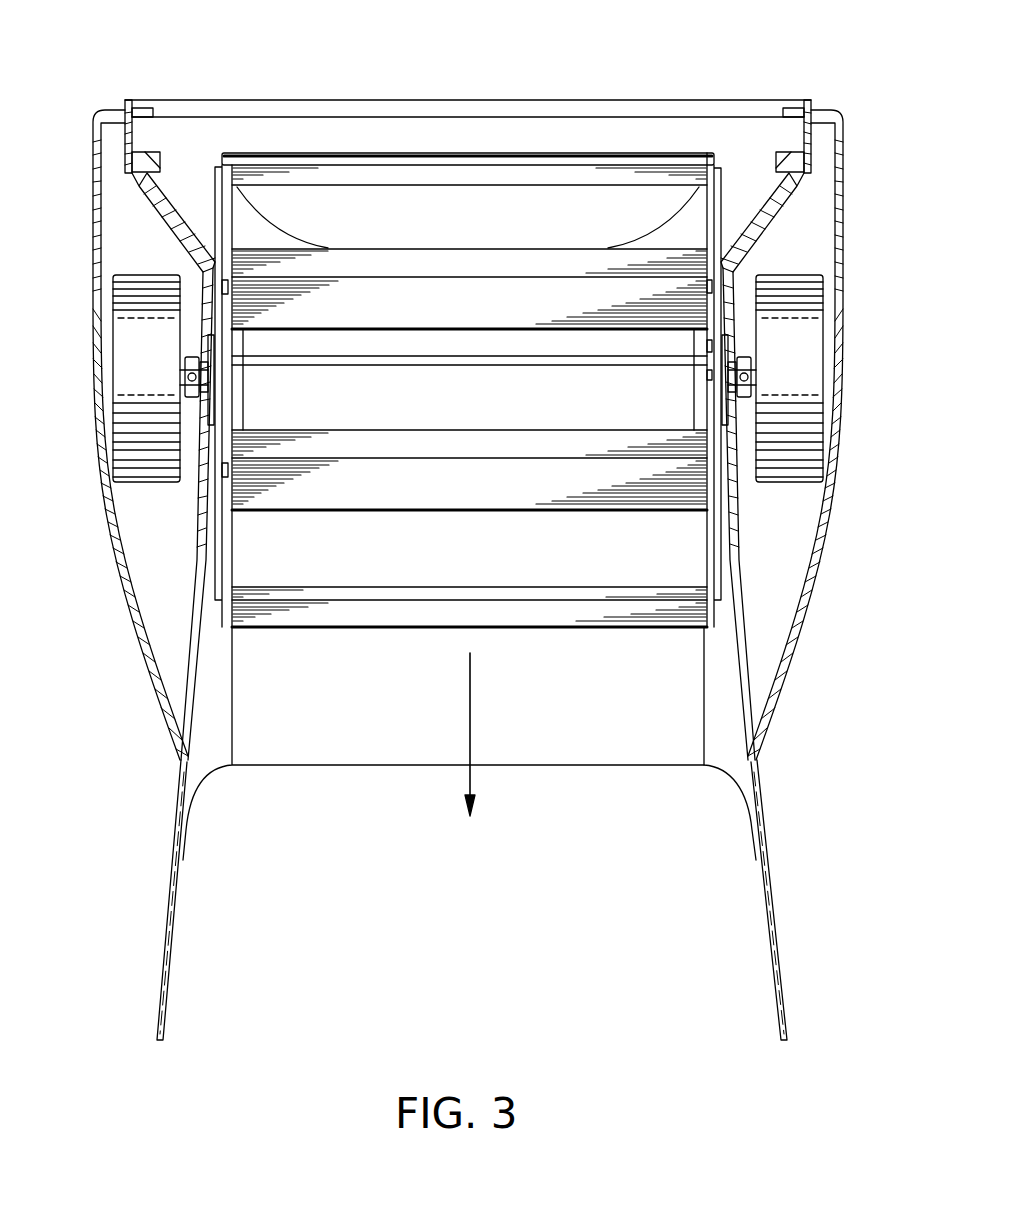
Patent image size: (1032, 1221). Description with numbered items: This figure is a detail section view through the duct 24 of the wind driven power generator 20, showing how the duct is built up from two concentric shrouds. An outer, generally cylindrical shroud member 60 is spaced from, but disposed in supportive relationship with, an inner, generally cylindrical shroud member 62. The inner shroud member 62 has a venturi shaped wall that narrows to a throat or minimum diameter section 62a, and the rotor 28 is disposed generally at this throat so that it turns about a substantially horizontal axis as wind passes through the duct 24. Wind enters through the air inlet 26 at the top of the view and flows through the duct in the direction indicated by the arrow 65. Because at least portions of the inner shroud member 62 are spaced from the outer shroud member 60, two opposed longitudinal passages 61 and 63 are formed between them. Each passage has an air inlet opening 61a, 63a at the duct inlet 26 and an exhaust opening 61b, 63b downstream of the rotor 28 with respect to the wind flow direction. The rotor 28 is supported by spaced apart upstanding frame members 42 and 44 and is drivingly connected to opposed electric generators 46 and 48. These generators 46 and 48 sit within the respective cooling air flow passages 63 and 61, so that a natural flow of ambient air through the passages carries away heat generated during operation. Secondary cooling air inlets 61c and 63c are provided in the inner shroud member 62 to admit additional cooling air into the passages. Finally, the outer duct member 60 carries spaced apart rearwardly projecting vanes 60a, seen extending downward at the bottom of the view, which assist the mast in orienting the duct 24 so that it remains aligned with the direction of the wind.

The wind driven power generator 20 is at (612, 76).
The duct 24 is at (848, 118).
The air inlet 26 is at (143, 113).
The rotor 28 is at (428, 148).
The upstanding frame member 42 is at (742, 360).
The upstanding frame member 44 is at (190, 358).
The electric generator 46 is at (797, 306).
The electric generator 48 is at (130, 298).
The outer shroud member 60 is at (125, 568).
The rearwardly projecting vanes 60a is at (168, 1007).
The longitudinal passage 61 is at (182, 577).
The air inlet opening 61a is at (118, 110).
The exhaust opening 61b is at (195, 678).
The secondary cooling air inlet 61c is at (163, 165).
The inner shroud member 62 is at (165, 195).
The throat 62a is at (258, 322).
The longitudinal passage 63 is at (758, 595).
The air inlet opening 63a is at (808, 104).
The exhaust opening 63b is at (742, 668).
The secondary cooling air inlet 63c is at (770, 177).
The wind flow direction arrow 65 is at (472, 706).